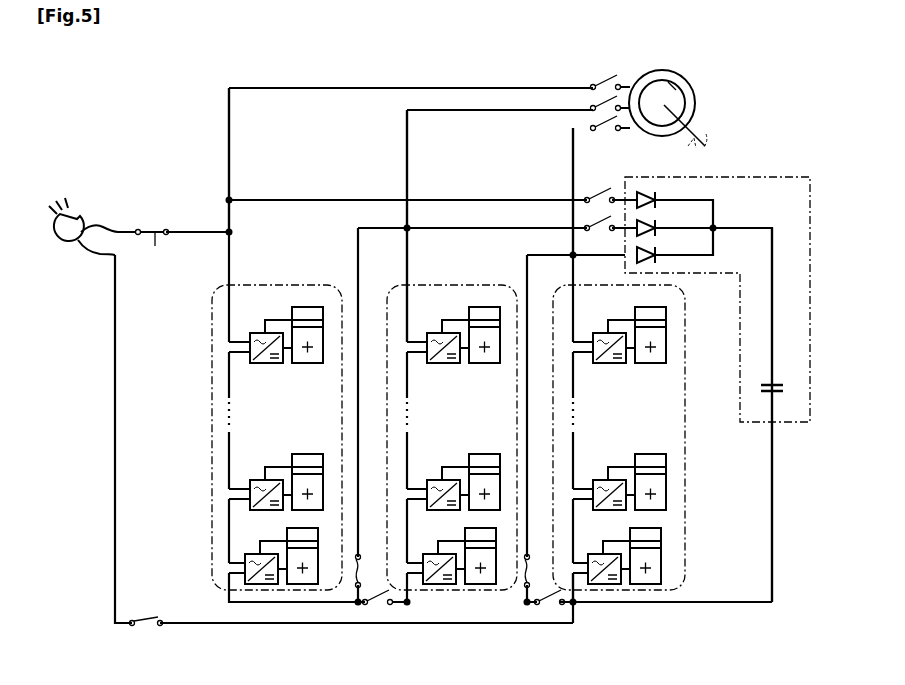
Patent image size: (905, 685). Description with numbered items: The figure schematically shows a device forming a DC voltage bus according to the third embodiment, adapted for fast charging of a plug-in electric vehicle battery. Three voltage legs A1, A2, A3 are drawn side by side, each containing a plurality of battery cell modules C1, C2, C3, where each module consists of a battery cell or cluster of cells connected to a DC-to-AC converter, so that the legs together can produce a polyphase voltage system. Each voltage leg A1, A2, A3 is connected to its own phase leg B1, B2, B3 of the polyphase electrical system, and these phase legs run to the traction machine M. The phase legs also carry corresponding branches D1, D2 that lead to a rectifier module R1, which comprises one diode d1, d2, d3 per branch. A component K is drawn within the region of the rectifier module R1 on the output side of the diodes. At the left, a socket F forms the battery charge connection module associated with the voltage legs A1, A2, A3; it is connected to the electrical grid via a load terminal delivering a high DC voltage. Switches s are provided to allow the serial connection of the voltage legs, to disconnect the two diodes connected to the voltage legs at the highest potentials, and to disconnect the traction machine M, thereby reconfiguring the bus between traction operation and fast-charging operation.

The socket F is at (63, 248).
The switches s is at (155, 247).
The phase leg B1 is at (288, 90).
The phase leg B2 is at (472, 111).
The phase leg B3 is at (575, 150).
The branch D1 is at (285, 199).
The branch D2 is at (535, 225).
The traction machine M is at (692, 74).
The diode d1 is at (659, 196).
The diode d2 is at (646, 228).
The diode d3 is at (646, 255).
The rectifier module R1 is at (810, 302).
The capacitor K is at (777, 380).
The voltage leg A1 is at (258, 437).
The voltage leg A2 is at (452, 437).
The voltage leg A3 is at (619, 437).
The battery cell module C1 is at (322, 363).
The battery cell module C2 is at (495, 353).
The battery cell module C3 is at (666, 362).